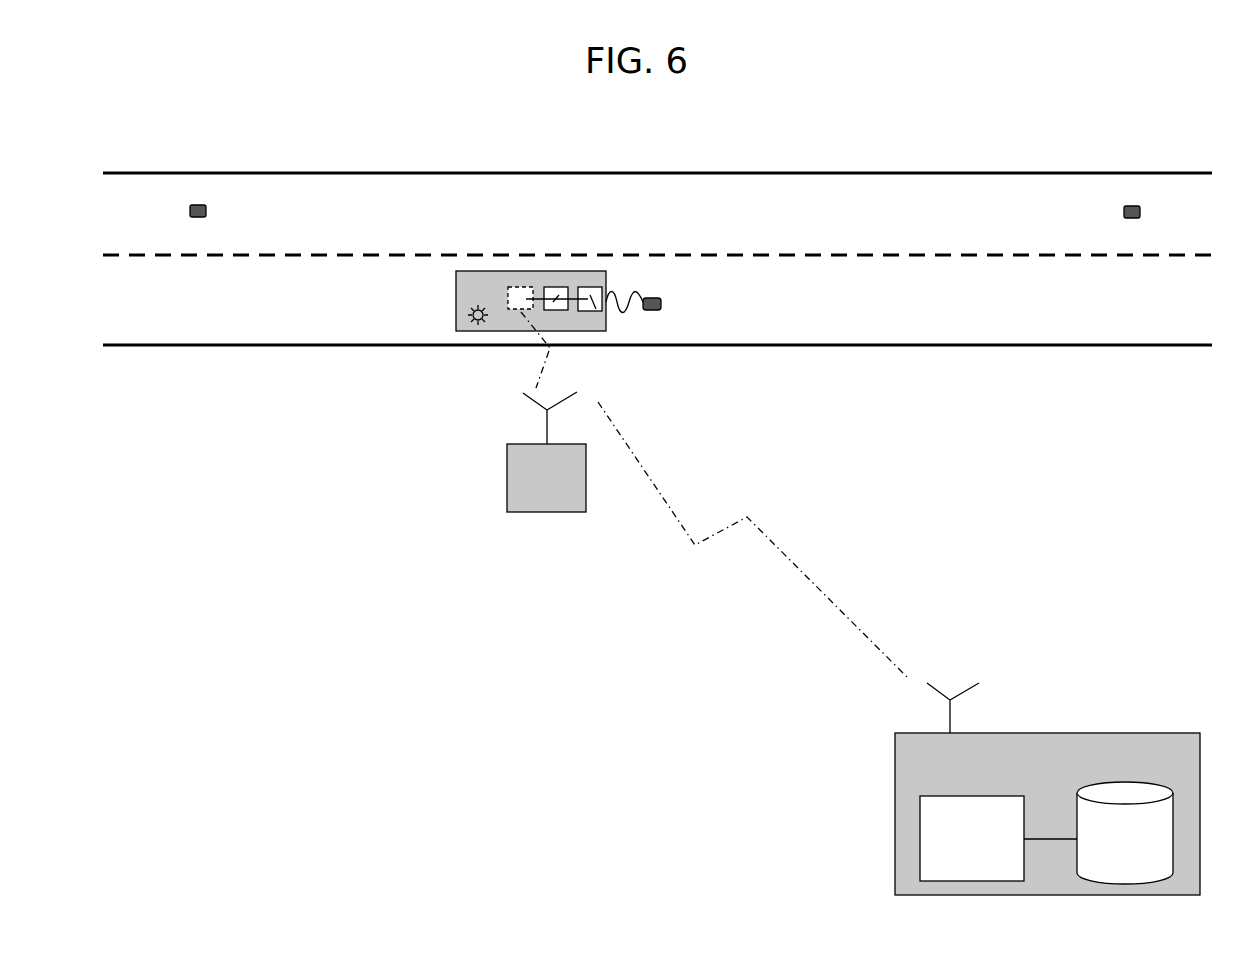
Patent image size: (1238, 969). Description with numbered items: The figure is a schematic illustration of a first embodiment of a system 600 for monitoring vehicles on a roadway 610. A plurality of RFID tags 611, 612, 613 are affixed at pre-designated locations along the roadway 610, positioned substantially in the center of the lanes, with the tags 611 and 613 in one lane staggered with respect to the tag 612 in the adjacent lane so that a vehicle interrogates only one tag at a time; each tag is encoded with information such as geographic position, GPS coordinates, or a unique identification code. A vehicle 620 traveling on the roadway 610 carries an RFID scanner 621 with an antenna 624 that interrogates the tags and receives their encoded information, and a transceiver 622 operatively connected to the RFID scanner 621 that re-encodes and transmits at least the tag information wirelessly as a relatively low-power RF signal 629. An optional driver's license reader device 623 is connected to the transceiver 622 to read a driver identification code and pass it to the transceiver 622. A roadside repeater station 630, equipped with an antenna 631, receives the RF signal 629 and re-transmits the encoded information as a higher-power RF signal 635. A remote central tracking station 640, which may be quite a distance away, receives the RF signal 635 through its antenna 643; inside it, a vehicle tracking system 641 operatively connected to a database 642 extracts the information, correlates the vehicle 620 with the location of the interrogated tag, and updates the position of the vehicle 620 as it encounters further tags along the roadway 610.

The system for monitoring vehicles on a roadway 600 is at (257, 693).
The roadway 610 is at (555, 173).
The RFID tag 611 is at (198, 205).
The RFID tag 612 is at (651, 310).
The RFID tag 613 is at (1131, 206).
The vehicle 620 is at (508, 304).
The RFID scanner 621 is at (587, 287).
The transceiver 622 is at (554, 287).
The driver's license reader device 623 is at (519, 308).
The antenna 624 is at (468, 315).
The RF signal 629 is at (543, 358).
The roadside repeater station 630 is at (507, 468).
The antenna 631 is at (547, 419).
The RF signal 635 is at (770, 540).
The remote central tracking station 640 is at (1088, 733).
The vehicle tracking system 641 is at (920, 822).
The database 642 is at (1125, 833).
The antenna 643 is at (972, 683).